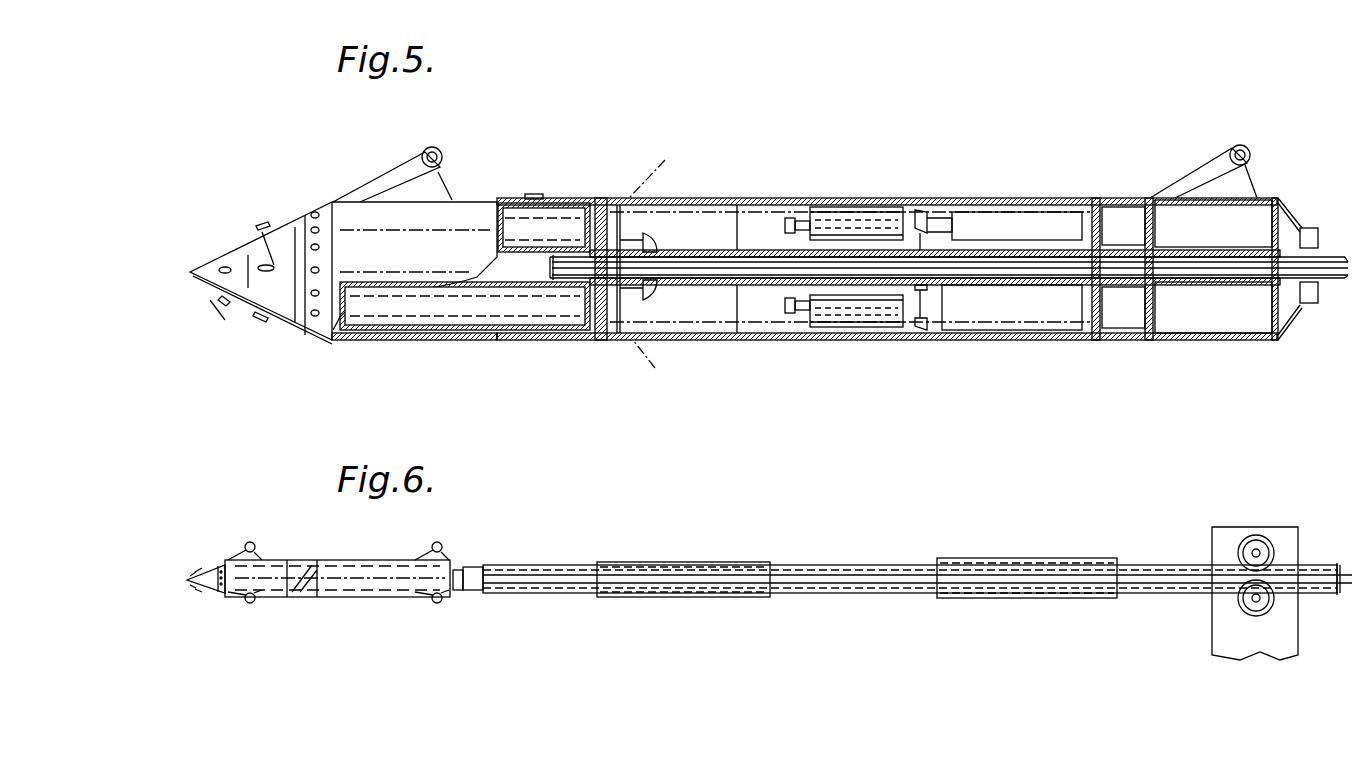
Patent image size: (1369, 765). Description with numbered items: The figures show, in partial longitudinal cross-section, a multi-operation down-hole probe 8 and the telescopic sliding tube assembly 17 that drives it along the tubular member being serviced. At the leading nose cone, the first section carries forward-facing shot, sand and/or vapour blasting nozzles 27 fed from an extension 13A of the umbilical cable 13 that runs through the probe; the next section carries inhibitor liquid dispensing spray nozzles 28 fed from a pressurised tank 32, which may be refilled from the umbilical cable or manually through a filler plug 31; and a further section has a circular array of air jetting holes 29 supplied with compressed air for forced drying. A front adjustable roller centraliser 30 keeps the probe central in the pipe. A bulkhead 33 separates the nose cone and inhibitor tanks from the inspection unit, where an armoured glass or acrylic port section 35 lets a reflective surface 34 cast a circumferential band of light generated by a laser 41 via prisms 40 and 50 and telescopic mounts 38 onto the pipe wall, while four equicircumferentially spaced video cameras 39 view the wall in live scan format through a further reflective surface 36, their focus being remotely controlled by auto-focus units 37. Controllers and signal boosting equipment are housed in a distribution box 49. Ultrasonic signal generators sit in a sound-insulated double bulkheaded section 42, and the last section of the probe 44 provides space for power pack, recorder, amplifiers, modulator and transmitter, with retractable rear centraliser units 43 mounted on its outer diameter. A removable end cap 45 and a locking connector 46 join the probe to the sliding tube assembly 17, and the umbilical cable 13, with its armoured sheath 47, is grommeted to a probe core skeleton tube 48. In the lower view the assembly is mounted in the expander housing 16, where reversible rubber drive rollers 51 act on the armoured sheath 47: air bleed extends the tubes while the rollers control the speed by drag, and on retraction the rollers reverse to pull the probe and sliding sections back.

In FIG. 5, the probe 8 is at (340, 197).
In FIG. 6, the probe 8 is at (343, 558).
In FIG. 5, the umbilical cable 13 is at (1337, 247).
In FIG. 6, the umbilical cable 13 is at (1315, 587).
In FIG. 5, the extension of the umbilical cable 13A is at (570, 293).
In FIG. 6, the expander housing 16 is at (1212, 623).
In FIG. 6, the sliding tube assembly 17 is at (605, 562).
In FIG. 5, the blasting nozzles 27 is at (222, 266).
In FIG. 5, the inhibitor liquid dispensing spray nozzles 28 is at (272, 262).
In FIG. 5, the air jetting holes 29 is at (312, 297).
In FIG. 5, the front adjustable roller centraliser 30 is at (442, 160).
In FIG. 6, the front adjustable roller centraliser 30 is at (252, 593).
In FIG. 5, the filler plug 31 is at (534, 194).
In FIG. 5, the pressurised tank 32 is at (533, 320).
In FIG. 5, the bulkhead 33 is at (597, 199).
In FIG. 5, the reflective surface 34 is at (651, 262).
In FIG. 5, the port section 35 is at (698, 198).
In FIG. 5, the further reflective surface 36 is at (655, 293).
In FIG. 5, the auto-focus units 37 is at (790, 217).
In FIG. 5, the telescopic mounts 38 is at (828, 208).
In FIG. 5, the video cameras 39 is at (850, 225).
In FIG. 5, the prism 40 is at (923, 208).
In FIG. 5, the laser 41 is at (988, 218).
In FIG. 5, the double bulkheaded section 42 is at (1120, 212).
In FIG. 5, the rear centraliser units 43 is at (1247, 157).
In FIG. 6, the rear centraliser units 43 is at (438, 593).
In FIG. 5, the last section of the probe 44 is at (1177, 213).
In FIG. 5, the removable end cap 45 is at (1288, 207).
In FIG. 5, the locking connector 46 is at (1313, 227).
In FIG. 5, the armoured sheath 47 is at (1302, 308).
In FIG. 5, the probe core skeleton tube 48 is at (1258, 285).
In FIG. 5, the distribution box 49 is at (992, 313).
In FIG. 5, the prism 50 is at (937, 313).
In FIG. 6, the drive rollers 51 is at (1263, 540).